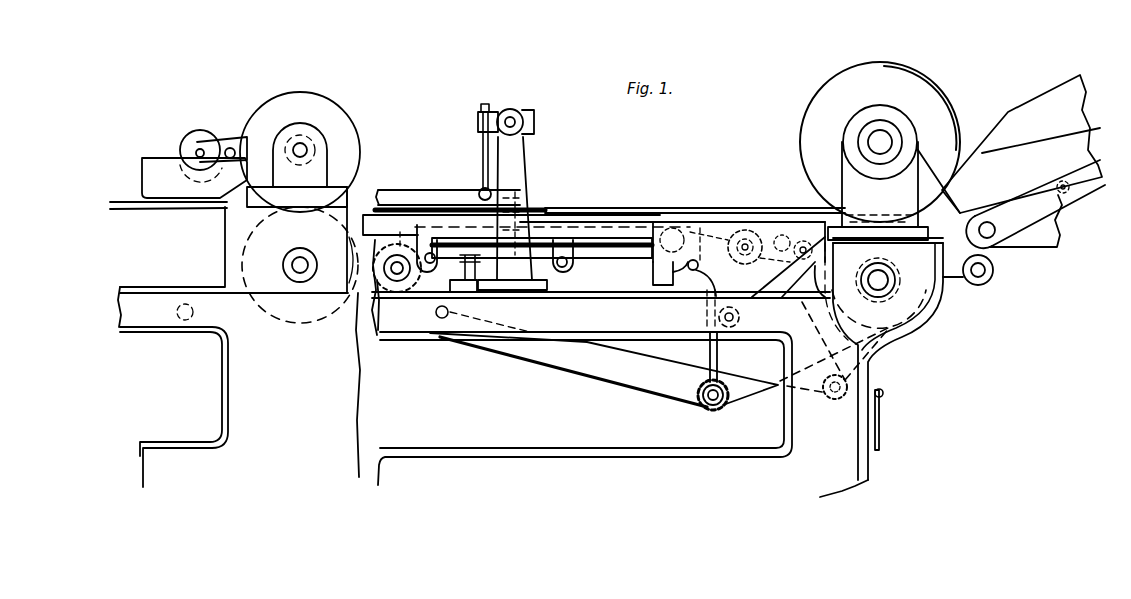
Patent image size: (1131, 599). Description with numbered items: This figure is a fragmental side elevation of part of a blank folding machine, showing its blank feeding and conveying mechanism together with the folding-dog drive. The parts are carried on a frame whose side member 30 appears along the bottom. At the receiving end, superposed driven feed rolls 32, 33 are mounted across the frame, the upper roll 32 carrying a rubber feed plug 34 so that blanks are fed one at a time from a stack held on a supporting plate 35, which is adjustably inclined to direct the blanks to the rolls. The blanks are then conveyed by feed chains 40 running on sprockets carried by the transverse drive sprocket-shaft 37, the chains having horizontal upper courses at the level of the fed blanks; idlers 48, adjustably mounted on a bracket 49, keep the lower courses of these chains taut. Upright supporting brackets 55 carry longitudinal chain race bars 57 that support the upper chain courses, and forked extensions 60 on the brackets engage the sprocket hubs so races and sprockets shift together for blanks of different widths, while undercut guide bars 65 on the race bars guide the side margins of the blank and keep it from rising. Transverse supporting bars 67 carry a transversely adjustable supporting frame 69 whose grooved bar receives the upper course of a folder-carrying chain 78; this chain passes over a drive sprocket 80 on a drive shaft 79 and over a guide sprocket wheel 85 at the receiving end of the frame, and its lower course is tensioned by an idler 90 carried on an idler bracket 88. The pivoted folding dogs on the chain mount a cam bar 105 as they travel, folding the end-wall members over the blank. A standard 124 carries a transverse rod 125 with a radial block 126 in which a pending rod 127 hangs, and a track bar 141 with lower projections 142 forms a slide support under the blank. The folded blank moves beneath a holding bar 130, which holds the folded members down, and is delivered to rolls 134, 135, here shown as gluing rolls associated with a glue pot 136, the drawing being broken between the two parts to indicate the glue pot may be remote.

The frame side member 30 is at (465, 446).
The upper feed roll 32 is at (909, 88).
The lower feed roll 33 is at (874, 352).
The rubber feed plug 34 is at (957, 120).
The supporting plate 35 is at (1090, 124).
The drive sprocket-shaft 37 is at (877, 285).
The feed chain 40 is at (577, 377).
The idler 48 is at (707, 405).
The bracket 49 is at (717, 350).
The upright supporting bracket 55 is at (700, 295).
The chain race bar 57 is at (635, 212).
The forked extension 60 is at (798, 308).
The undercut guide bar 65 is at (710, 210).
The transverse supporting bar 67 is at (468, 292).
The supporting frame 69 is at (614, 252).
The folder-carrying chain 78 is at (640, 352).
The drive shaft 79 is at (397, 280).
The drive sprocket 80 is at (428, 290).
The guide sprocket wheel 85 is at (735, 230).
The idler bracket 88 is at (881, 430).
The idler 90 is at (830, 397).
The cam bar 105 is at (593, 262).
The standard 124 is at (526, 172).
The transverse rod 125 is at (513, 116).
The radial block 126 is at (478, 122).
The pending rod 127 is at (480, 165).
The holding bar 130 is at (448, 198).
The gluing roll 134 is at (259, 121).
The gluing roll 135 is at (243, 246).
The glue pot 136 is at (194, 164).
The track bar 141 is at (603, 222).
The lower projection 142 is at (586, 292).